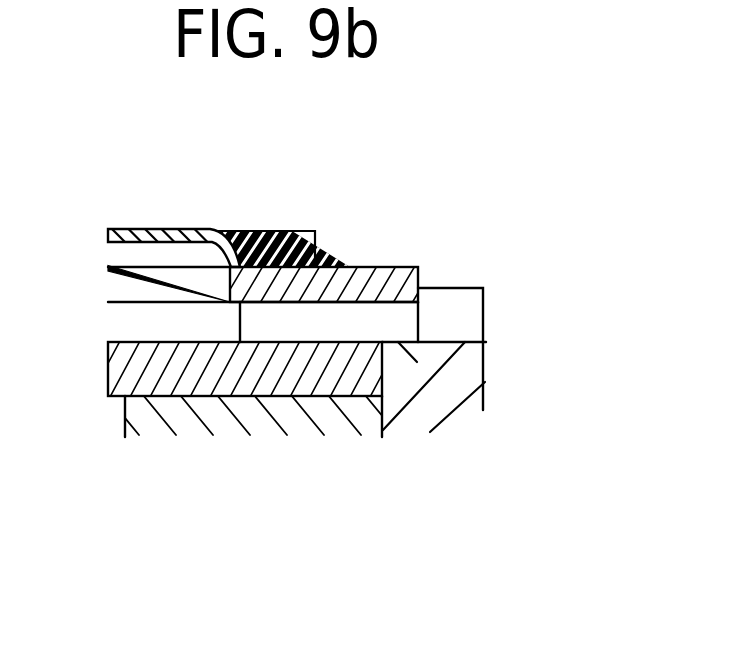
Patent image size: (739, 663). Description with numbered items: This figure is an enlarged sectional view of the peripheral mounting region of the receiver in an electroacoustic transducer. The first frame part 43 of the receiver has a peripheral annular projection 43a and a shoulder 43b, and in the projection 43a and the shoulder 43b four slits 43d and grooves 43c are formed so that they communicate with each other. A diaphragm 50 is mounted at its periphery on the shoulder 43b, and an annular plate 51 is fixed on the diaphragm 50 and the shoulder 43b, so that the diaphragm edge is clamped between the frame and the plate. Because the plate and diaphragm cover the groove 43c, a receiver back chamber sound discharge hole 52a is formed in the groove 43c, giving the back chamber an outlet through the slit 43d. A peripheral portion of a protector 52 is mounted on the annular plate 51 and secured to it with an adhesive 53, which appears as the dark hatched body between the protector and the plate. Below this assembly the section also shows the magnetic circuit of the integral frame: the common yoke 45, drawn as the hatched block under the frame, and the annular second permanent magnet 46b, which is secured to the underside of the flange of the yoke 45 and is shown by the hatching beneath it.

The first frame part 43 is at (435, 393).
The peripheral annular projection 43a is at (467, 290).
The shoulder 43b is at (405, 347).
The groove 43c is at (312, 343).
The slit 43d is at (455, 330).
The common yoke 45 is at (252, 368).
The annular second permanent magnet 46b is at (253, 427).
The diaphragm 50 is at (122, 268).
The annular plate 51 is at (400, 268).
The protector 52 is at (158, 228).
The receiver back chamber sound discharge hole 52a is at (357, 320).
The adhesive 53 is at (277, 232).